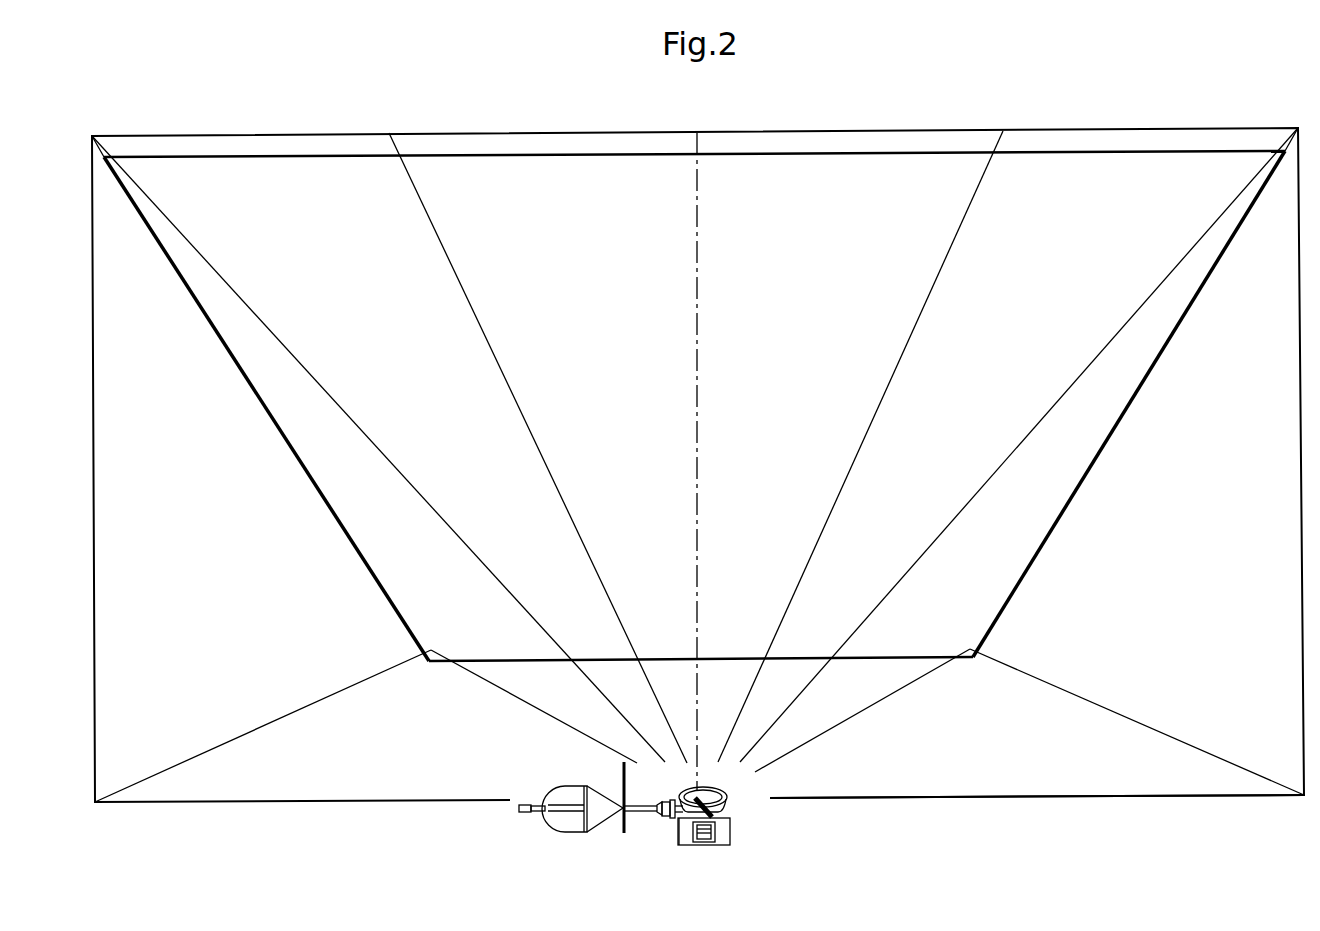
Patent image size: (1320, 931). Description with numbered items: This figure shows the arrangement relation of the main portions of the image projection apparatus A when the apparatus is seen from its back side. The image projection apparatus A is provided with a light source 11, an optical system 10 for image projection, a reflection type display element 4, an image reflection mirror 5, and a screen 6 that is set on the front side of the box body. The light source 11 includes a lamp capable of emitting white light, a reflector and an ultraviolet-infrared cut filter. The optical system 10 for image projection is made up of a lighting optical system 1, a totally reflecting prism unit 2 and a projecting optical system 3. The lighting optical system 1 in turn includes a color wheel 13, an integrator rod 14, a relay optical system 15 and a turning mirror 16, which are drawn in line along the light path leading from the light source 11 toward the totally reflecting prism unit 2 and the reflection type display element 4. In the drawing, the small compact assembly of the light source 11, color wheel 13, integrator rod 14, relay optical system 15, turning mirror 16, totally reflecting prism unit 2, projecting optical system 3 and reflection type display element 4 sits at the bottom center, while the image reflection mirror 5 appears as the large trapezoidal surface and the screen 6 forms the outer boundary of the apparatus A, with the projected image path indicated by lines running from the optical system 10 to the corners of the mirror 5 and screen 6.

The lighting optical system 1 is at (657, 743).
The totally reflecting prism unit 2 is at (679, 844).
The projecting optical system 3 is at (730, 834).
The reflection type display element 4 is at (705, 850).
The image reflection mirror 5 is at (1098, 457).
The screen 6 is at (964, 797).
The optical system for image projection 10 is at (735, 848).
The light source 11 is at (565, 784).
The color wheel 13 is at (624, 834).
The integrator rod 14 is at (643, 813).
The relay optical system 15 is at (666, 798).
The turning mirror 16 is at (708, 799).
The image projection apparatus A is at (192, 466).